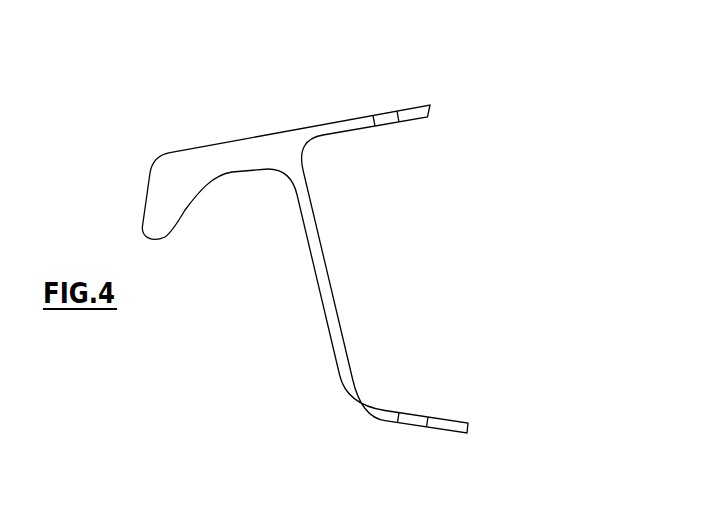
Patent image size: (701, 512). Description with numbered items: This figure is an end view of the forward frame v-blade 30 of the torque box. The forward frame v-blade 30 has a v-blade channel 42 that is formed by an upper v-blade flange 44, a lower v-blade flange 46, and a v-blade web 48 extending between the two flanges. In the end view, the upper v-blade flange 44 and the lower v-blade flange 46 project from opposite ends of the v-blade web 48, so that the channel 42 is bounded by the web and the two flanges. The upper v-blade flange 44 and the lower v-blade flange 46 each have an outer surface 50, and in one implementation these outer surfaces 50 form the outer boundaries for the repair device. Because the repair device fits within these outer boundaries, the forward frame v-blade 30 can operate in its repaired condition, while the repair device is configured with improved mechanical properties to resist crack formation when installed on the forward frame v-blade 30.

The forward frame v-blade 30 is at (140, 150).
The v-blade channel 42 is at (553, 268).
The upper v-blade flange 44 is at (457, 79).
The lower v-blade flange 46 is at (505, 436).
The v-blade web 48 is at (280, 257).
The outer surface 50 is at (350, 118).